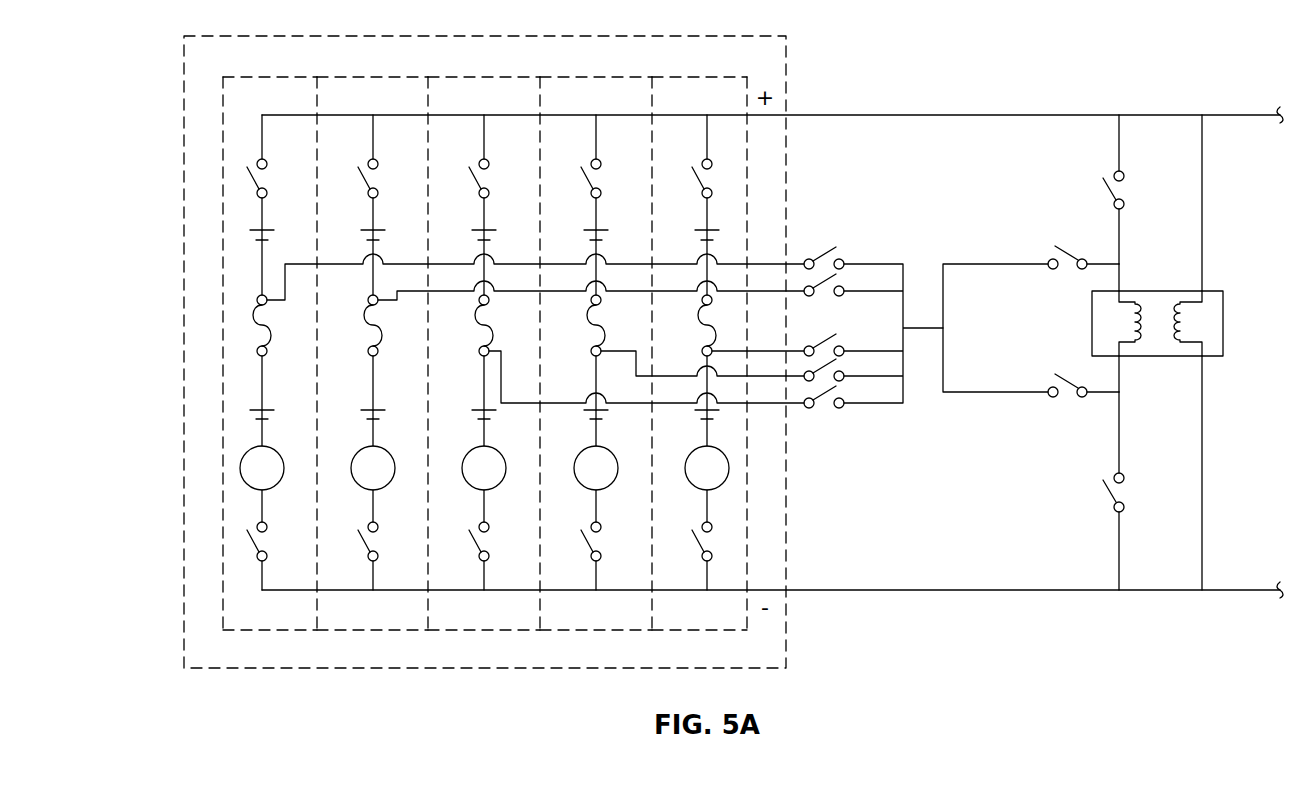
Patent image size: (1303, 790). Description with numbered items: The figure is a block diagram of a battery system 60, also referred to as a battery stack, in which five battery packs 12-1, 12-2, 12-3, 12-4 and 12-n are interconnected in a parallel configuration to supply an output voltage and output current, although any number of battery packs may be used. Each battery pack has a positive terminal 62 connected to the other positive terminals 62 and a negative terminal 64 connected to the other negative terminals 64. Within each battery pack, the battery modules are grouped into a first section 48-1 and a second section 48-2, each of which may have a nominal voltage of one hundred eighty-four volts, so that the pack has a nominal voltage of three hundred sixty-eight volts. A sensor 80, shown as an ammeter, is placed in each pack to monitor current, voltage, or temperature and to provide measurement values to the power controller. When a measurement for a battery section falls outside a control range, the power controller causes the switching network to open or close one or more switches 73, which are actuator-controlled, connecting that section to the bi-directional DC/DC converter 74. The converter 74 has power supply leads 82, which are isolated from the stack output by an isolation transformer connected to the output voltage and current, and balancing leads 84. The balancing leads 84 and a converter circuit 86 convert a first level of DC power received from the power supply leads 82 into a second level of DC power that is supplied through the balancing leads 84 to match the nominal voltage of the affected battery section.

The battery system 60 is at (240, 34).
The first battery pack 12-1 is at (256, 75).
The second battery pack 12-2 is at (376, 75).
The third battery pack 12-3 is at (500, 75).
The fourth battery pack 12-4 is at (598, 75).
The nth battery pack 12-n is at (718, 75).
The positive terminal 62 is at (262, 135).
The switch 73 is at (248, 168).
The first battery section 48-1 is at (250, 230).
The second battery section 48-2 is at (250, 410).
The sensor 80 is at (240, 468).
The negative terminal 64 is at (262, 572).
The power supply lead 82 is at (1202, 155).
The balancing lead 84 is at (1120, 272).
The bi-directional DC/DC converter 74 is at (1186, 343).
The converter circuit 86 is at (1170, 360).